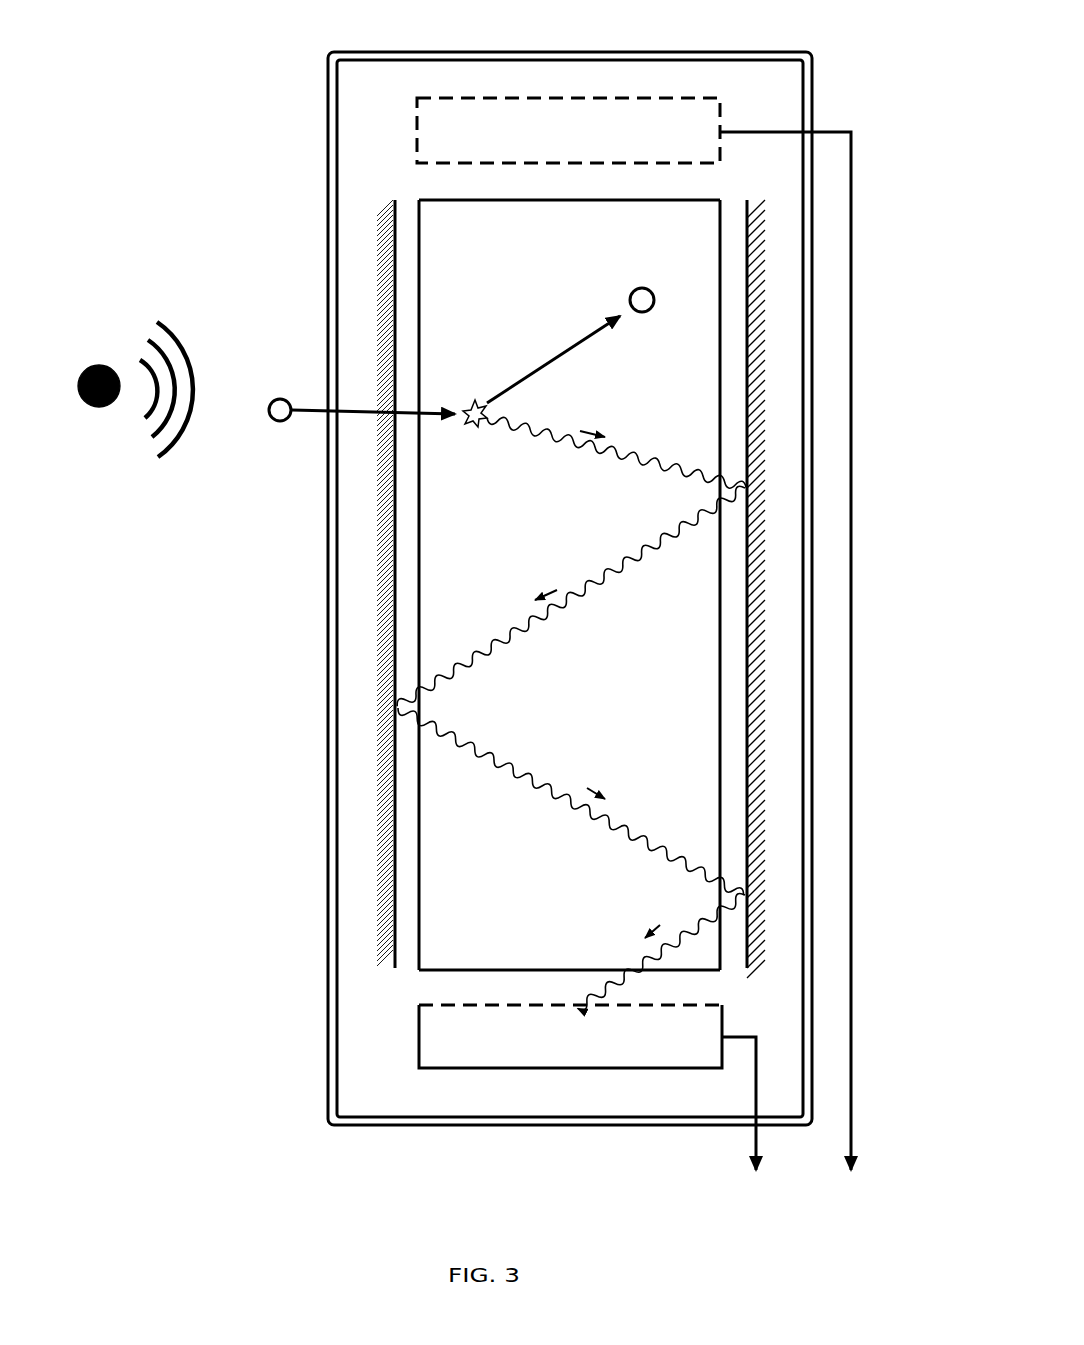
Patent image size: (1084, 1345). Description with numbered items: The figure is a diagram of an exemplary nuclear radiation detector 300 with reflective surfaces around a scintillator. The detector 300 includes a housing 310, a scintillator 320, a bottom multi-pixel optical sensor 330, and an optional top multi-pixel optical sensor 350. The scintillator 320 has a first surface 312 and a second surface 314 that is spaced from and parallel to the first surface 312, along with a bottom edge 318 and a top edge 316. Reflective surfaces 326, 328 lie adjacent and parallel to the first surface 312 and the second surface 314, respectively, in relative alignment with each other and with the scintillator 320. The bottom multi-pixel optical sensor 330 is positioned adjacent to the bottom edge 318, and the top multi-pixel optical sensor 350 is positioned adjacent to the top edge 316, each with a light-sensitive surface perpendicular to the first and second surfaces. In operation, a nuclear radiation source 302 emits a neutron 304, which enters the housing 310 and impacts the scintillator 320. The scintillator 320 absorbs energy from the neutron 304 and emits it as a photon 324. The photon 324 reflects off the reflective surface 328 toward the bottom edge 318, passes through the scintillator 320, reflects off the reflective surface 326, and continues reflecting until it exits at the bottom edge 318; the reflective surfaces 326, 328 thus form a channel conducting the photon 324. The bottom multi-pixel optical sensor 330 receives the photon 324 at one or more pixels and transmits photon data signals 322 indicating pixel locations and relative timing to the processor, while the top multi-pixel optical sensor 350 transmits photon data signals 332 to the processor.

The nuclear radiation detector 300 is at (246, 70).
The nuclear radiation source 302 is at (92, 407).
The neutron 304 is at (270, 422).
The housing 310 is at (502, 51).
The first surface 312 is at (420, 312).
The second surface 314 is at (718, 370).
The top edge 316 is at (438, 200).
The bottom edge 318 is at (450, 970).
The scintillator 320 is at (569, 570).
The photon data signals 322 is at (690, 1176).
The photon 324 is at (642, 457).
The reflective surface 326 is at (393, 200).
The reflective surface 328 is at (747, 200).
The bottom multi-pixel optical sensor 330 is at (419, 1023).
The photon data signals 332 is at (908, 1178).
The top multi-pixel optical sensor 350 is at (720, 115).